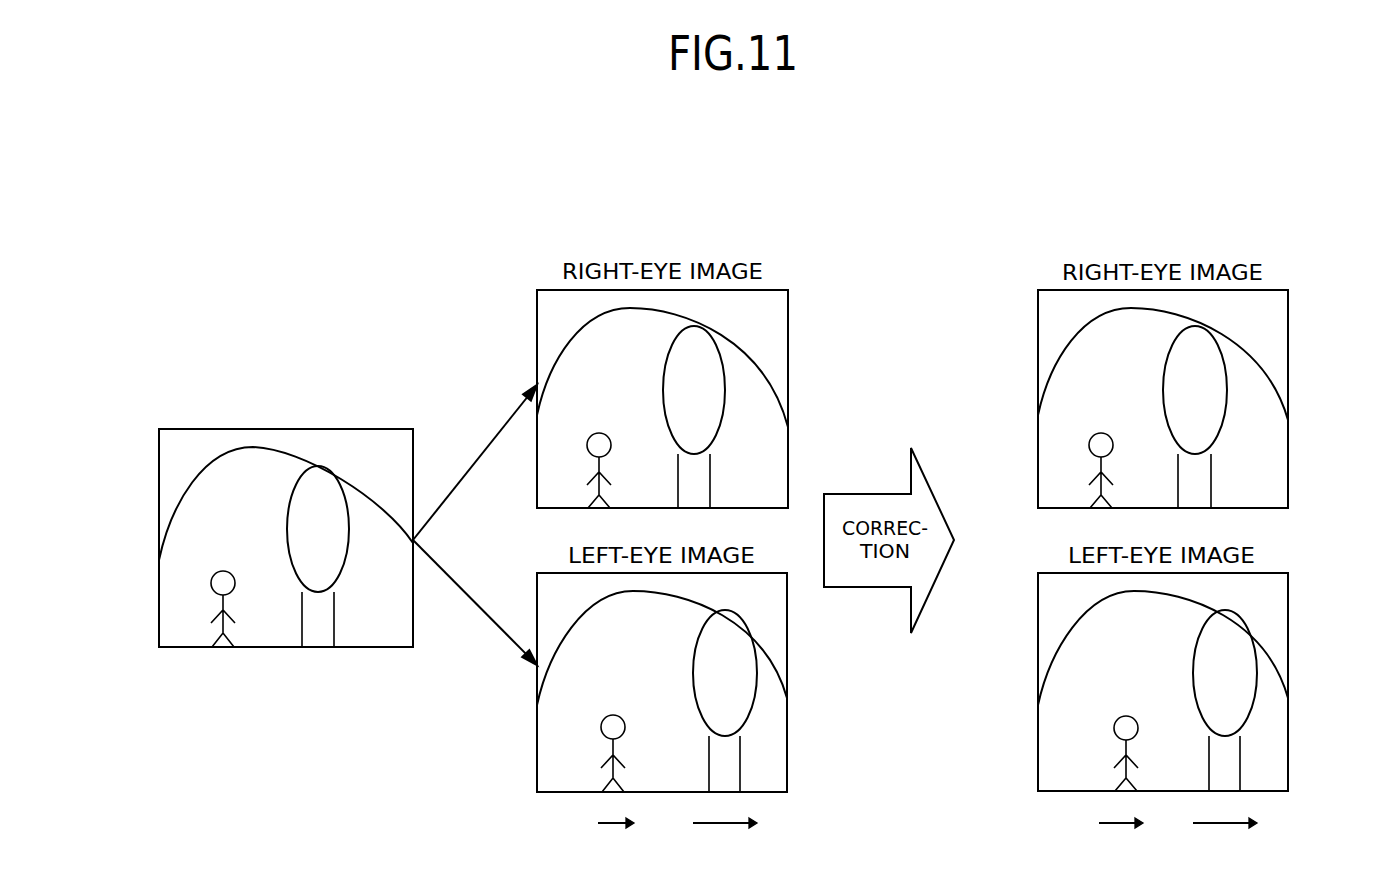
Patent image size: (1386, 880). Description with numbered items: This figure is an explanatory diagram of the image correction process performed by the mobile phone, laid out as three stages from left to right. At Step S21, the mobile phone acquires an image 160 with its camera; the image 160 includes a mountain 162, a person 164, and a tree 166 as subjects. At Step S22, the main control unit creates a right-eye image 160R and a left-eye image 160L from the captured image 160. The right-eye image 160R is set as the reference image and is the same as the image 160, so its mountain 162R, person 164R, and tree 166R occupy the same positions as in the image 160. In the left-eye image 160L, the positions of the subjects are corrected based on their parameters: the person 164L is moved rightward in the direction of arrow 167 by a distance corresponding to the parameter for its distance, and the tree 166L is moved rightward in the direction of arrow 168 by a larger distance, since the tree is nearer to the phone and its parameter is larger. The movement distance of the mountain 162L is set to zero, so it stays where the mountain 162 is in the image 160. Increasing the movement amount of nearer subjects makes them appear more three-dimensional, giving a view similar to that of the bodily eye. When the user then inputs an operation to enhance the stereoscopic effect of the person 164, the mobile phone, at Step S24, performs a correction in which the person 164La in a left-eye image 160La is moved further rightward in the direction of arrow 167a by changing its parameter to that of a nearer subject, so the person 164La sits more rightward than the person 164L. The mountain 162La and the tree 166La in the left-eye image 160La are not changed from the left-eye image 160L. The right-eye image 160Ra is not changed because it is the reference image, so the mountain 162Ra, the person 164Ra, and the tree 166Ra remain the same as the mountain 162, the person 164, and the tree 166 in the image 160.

The image 160 is at (385, 429).
The mountain 162 is at (197, 495).
The person 164 is at (213, 585).
The tree 166 is at (321, 637).
The right-eye image 160R is at (785, 290).
The mountain 162R is at (747, 378).
The person 164R is at (592, 448).
The tree 166R is at (713, 404).
The left-eye image 160L is at (787, 640).
The mountain 162L is at (762, 707).
The person 164L is at (603, 730).
The tree 166L is at (733, 718).
The arrow 167 is at (613, 818).
The arrow 168 is at (733, 818).
The right-eye image 160Ra is at (1285, 290).
The mountain 162Ra is at (1247, 377).
The person 164Ra is at (1095, 448).
The tree 166Ra is at (1213, 405).
The left-eye image 160La is at (1288, 640).
The mountain 162La is at (1265, 690).
The person 164La is at (1117, 729).
The tree 166La is at (1233, 718).
The arrow 167a is at (1120, 818).
The step S21 is at (352, 335).
The step S22 is at (712, 205).
The step S24 is at (1200, 205).